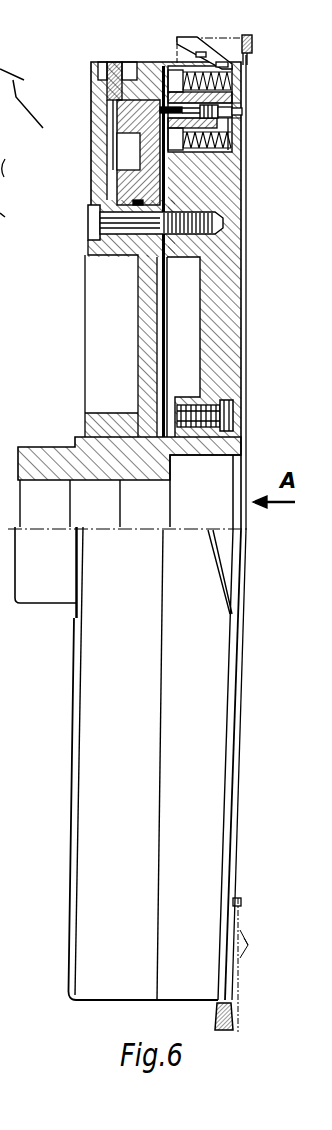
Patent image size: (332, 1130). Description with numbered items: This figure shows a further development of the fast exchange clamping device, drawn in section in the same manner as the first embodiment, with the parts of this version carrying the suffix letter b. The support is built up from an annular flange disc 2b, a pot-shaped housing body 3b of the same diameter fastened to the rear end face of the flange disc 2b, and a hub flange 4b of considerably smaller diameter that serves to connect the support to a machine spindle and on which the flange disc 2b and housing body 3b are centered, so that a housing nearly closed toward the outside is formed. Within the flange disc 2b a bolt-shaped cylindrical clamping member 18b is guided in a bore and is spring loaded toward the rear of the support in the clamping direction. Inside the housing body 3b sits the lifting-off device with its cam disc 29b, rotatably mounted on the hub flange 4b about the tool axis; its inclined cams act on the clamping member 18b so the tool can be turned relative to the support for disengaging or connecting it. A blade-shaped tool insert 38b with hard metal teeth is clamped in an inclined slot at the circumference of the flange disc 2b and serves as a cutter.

The flange disc 2b is at (233, 365).
The housing body 3b is at (90, 247).
The hub flange 4b is at (57, 453).
The clamping member 18b is at (183, 100).
The cam disc 29b is at (123, 173).
The tool insert 38b is at (203, 38).